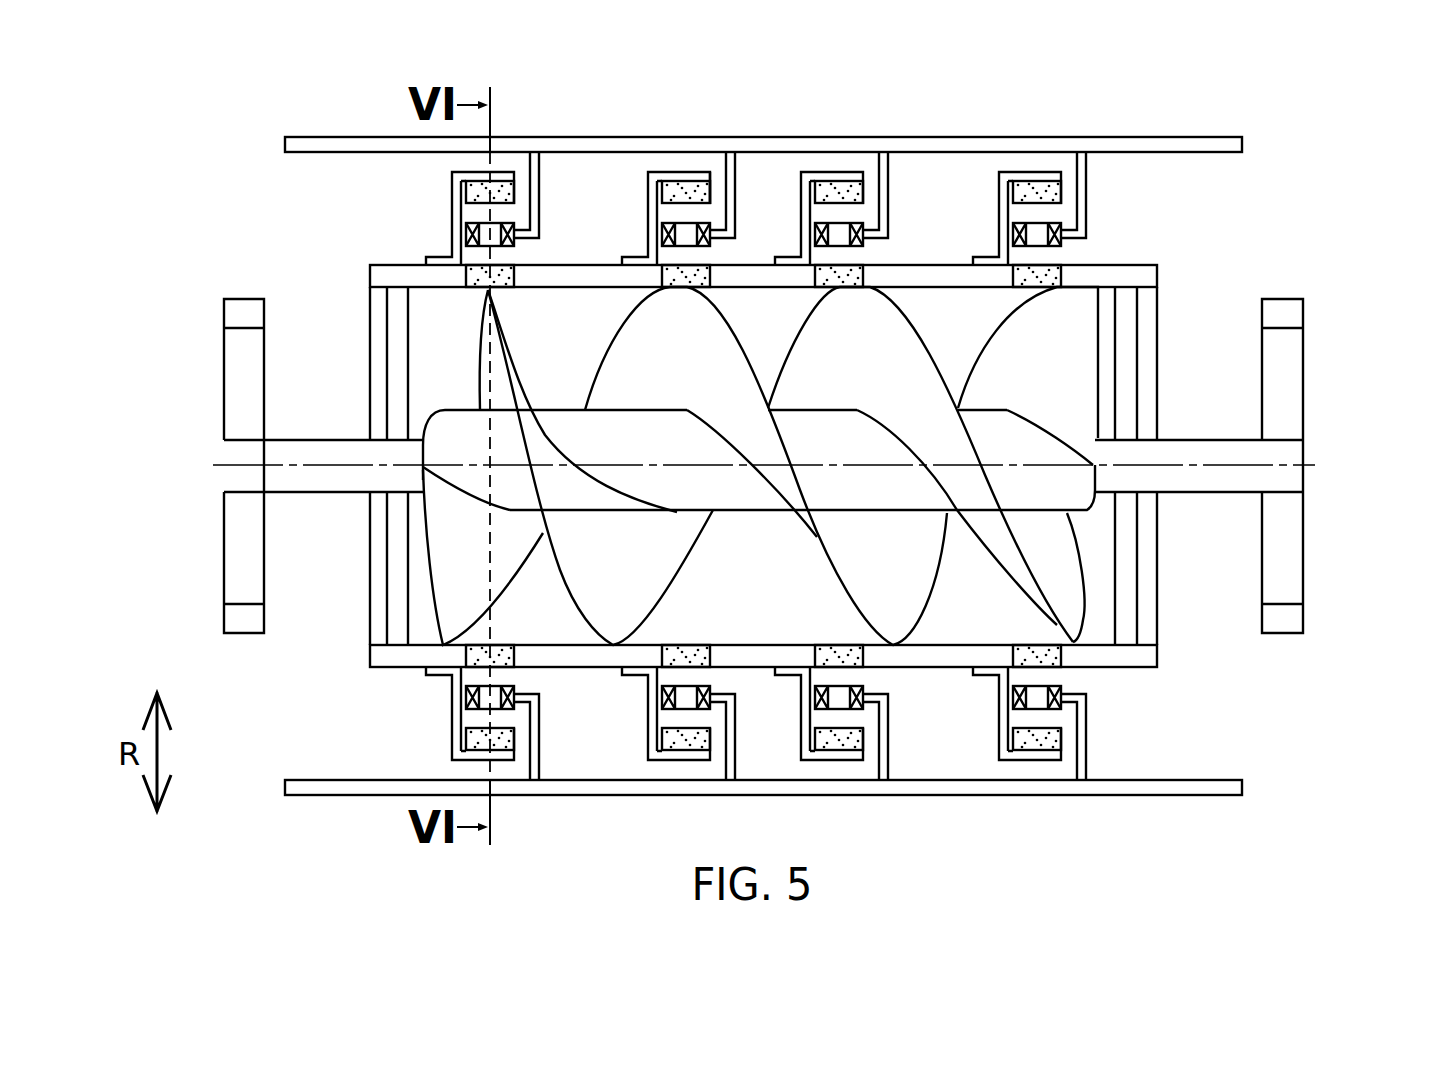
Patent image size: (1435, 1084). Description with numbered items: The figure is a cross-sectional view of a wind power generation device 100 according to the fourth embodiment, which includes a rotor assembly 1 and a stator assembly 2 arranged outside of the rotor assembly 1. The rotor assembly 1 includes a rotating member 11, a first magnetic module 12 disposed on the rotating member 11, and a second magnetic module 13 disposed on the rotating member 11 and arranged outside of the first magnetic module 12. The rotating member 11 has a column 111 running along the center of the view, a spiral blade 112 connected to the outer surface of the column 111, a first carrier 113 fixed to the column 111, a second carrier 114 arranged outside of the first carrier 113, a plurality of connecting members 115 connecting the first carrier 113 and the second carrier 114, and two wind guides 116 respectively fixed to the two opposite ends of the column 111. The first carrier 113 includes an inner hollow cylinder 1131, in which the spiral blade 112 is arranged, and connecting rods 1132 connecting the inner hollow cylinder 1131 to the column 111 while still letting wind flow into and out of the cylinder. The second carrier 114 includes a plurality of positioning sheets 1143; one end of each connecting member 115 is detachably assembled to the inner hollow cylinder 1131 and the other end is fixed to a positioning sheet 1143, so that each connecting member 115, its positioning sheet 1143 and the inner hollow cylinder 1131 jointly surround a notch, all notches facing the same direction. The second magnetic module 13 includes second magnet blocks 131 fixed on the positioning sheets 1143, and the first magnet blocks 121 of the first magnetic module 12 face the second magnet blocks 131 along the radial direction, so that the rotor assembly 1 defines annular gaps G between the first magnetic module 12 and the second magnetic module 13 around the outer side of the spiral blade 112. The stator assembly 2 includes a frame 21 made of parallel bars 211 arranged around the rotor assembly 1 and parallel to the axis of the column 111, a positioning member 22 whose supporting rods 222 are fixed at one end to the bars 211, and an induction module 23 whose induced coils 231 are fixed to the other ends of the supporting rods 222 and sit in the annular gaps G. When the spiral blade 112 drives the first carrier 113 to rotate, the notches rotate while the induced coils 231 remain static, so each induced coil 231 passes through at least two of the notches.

The wind power generation device 100 is at (144, 97).
The rotor assembly 1 is at (1188, 82).
The rotating member 11 is at (1146, 264).
The first magnetic module 12 is at (1063, 275).
The second magnetic module 13 is at (1043, 190).
The column 111 is at (758, 493).
The spiral blade 112 is at (663, 570).
The first carrier 113 is at (1378, 672).
The inner hollow cylinder 1131 is at (1097, 655).
The connecting rods 1132 is at (1143, 623).
The second carrier 114 is at (660, 62).
The positioning sheets 1143 is at (680, 183).
The connecting members 115 is at (653, 213).
The wind guides 116 is at (245, 310).
The first magnet blocks 121 is at (660, 277).
The second magnet blocks 131 is at (710, 184).
The stator assembly 2 is at (1063, 863).
The frame 21 is at (1078, 798).
The positioning member 22 is at (1090, 732).
The induction module 23 is at (1067, 685).
The bars 211 is at (973, 150).
The supporting rods 222 is at (885, 177).
The induced coils 231 is at (711, 228).
The annular gaps G is at (709, 262).